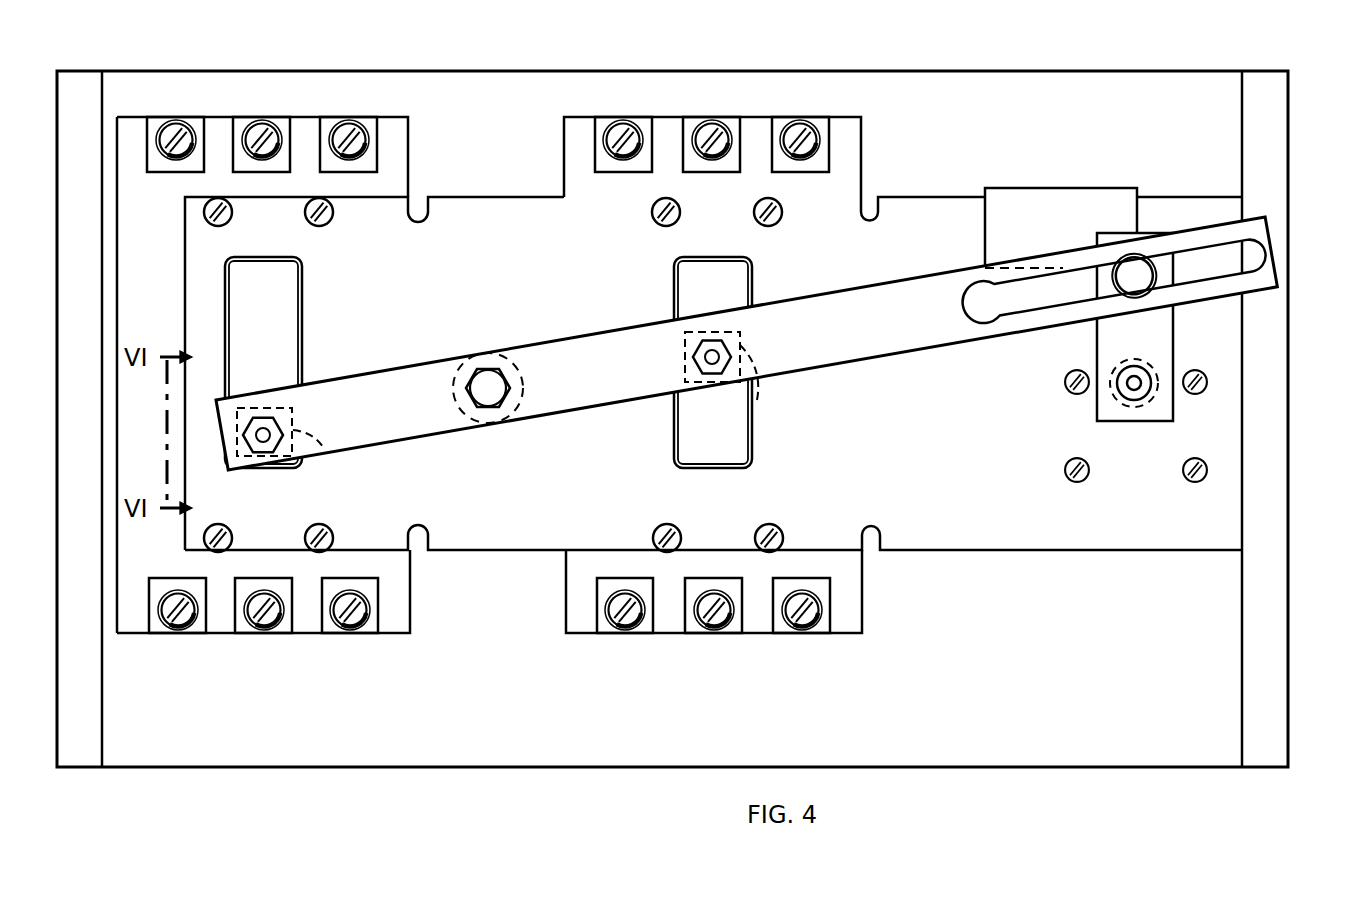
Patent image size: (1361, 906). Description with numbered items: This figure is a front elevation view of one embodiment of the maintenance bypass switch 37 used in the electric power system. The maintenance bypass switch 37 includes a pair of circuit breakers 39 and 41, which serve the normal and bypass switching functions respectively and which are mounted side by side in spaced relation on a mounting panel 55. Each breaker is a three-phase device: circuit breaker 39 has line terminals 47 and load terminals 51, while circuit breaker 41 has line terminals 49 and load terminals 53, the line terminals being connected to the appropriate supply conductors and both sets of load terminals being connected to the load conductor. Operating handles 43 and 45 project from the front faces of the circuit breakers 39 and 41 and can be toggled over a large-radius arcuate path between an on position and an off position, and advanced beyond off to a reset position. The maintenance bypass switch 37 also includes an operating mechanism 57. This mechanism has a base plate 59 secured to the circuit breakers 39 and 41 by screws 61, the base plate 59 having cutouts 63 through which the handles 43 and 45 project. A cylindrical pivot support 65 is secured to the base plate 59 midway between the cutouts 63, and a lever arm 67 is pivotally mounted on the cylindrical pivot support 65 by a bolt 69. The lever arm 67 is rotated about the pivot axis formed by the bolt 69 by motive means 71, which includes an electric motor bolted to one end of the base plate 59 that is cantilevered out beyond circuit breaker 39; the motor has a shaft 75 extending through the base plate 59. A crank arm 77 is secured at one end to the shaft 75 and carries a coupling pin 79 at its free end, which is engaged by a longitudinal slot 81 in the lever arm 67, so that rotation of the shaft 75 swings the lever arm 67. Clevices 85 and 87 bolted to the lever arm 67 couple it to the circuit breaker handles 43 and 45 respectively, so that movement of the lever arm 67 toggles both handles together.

The maintenance bypass switch 37 is at (892, 49).
The circuit breaker 39 is at (863, 160).
The circuit breaker 41 is at (408, 160).
The operating handle 43 is at (702, 295).
The operating handle 45 is at (285, 308).
The line terminals 47 is at (795, 117).
The line terminals 49 is at (350, 118).
The load terminals 51 is at (803, 632).
The load terminals 53 is at (350, 632).
The mounting panel 55 is at (485, 97).
The operating mechanism 57 is at (1297, 353).
The base plate 59 is at (962, 535).
The screws 61 is at (306, 221).
The cutouts 63 is at (238, 312).
The cylindrical pivot support 65 is at (520, 363).
The lever arm 67 is at (557, 413).
The bolt 69 is at (498, 402).
The motive means 71 is at (1110, 176).
The shaft 75 is at (1142, 392).
The crank arm 77 is at (1174, 333).
The coupling pin 79 is at (1137, 272).
The longitudinal slot 81 is at (1046, 303).
The clevis 85 is at (760, 393).
The clevis 87 is at (322, 446).